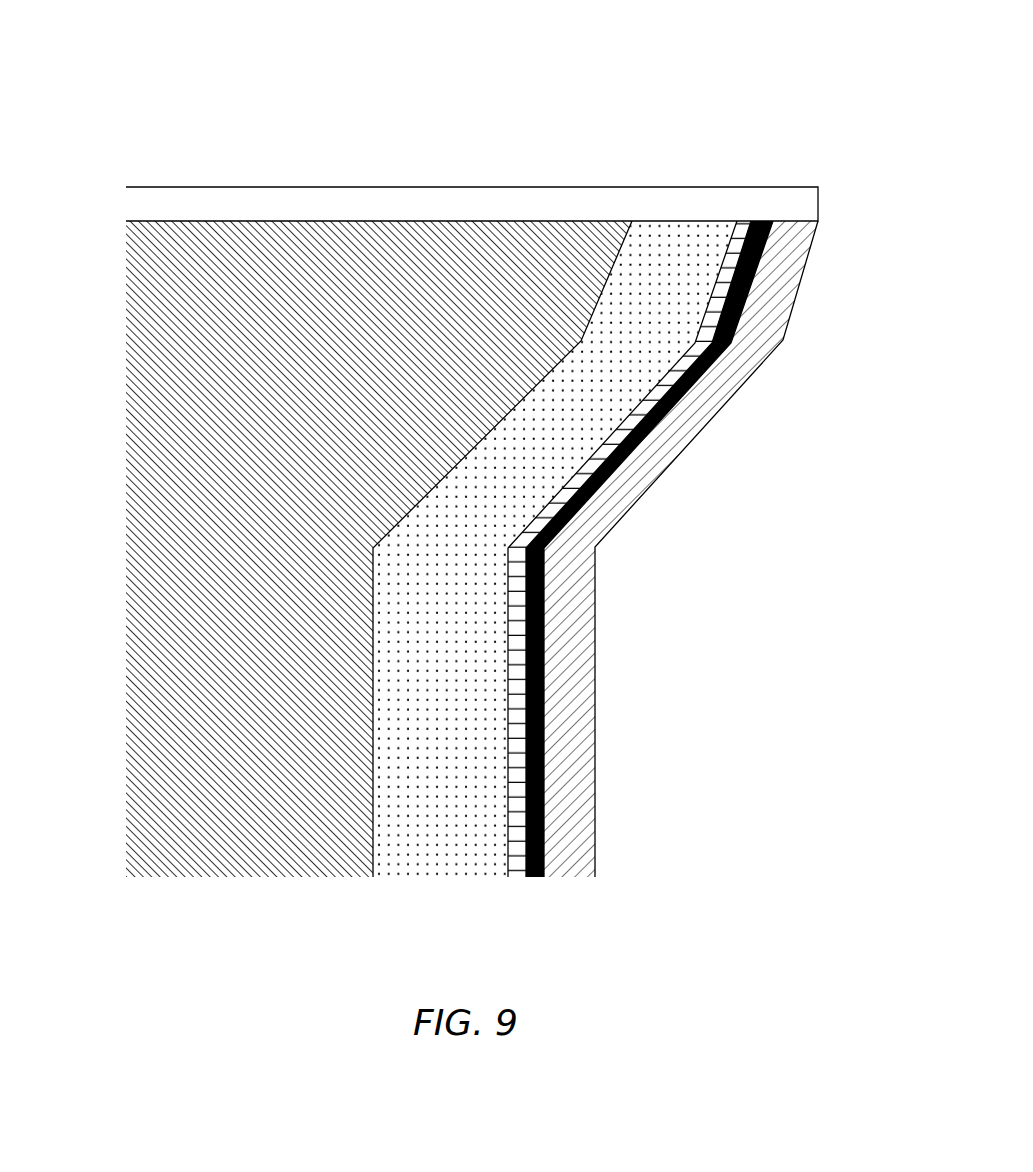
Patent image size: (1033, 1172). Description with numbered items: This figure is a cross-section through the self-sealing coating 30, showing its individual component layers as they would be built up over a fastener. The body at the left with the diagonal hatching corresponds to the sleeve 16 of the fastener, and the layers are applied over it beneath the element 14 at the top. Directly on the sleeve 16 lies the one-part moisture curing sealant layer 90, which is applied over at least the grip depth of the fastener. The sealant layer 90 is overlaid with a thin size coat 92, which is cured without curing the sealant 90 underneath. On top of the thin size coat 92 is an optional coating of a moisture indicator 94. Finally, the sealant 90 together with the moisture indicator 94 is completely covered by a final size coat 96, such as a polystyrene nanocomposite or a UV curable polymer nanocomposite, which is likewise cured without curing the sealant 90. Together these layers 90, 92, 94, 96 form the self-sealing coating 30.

The substrate 14 is at (268, 192).
The sleeve 16 is at (148, 307).
The self-sealing coating 30 is at (490, 910).
The sealant layer 90 is at (645, 230).
The thin size coat 92 is at (745, 220).
The moisture indicator 94 is at (763, 220).
The final size coat 96 is at (792, 264).